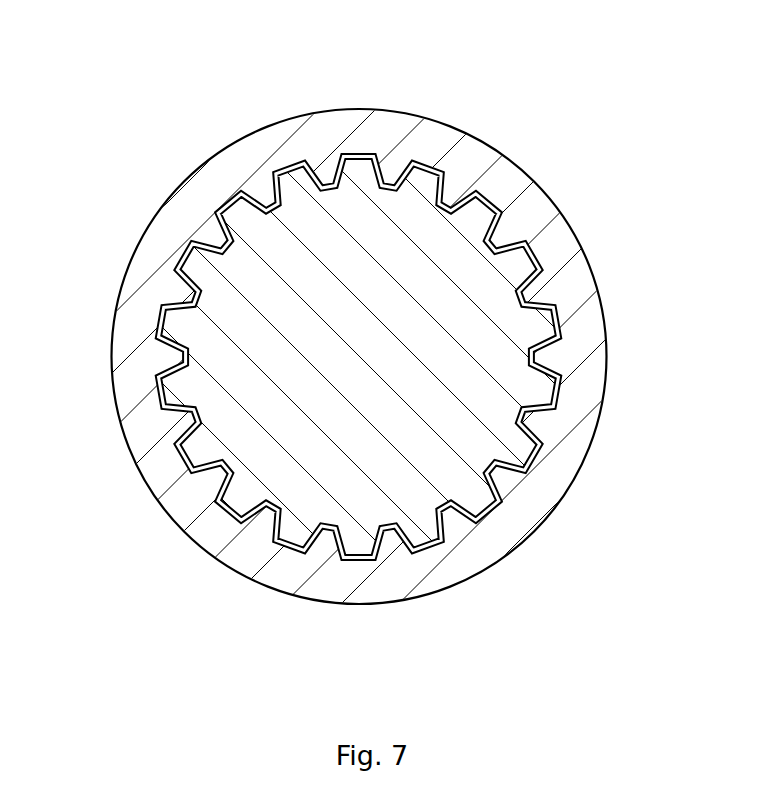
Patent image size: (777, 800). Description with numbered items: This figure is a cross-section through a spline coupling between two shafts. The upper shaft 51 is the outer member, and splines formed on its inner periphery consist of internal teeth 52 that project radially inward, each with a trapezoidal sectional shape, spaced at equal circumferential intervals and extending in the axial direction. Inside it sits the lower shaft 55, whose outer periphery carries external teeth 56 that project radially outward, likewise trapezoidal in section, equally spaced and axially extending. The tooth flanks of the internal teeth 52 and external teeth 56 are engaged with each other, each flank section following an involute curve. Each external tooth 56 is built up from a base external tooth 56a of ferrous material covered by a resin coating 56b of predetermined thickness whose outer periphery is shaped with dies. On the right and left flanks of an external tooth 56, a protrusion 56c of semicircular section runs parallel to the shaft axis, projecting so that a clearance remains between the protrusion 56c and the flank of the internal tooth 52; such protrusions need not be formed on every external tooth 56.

The upper shaft 51 is at (250, 165).
The internal teeth 52 is at (413, 158).
The lower shaft 55 is at (255, 295).
The external teeth 56 is at (447, 186).
The base external teeth 56a is at (470, 200).
The resin coating 56b is at (441, 170).
The protrusion 56c is at (350, 156).